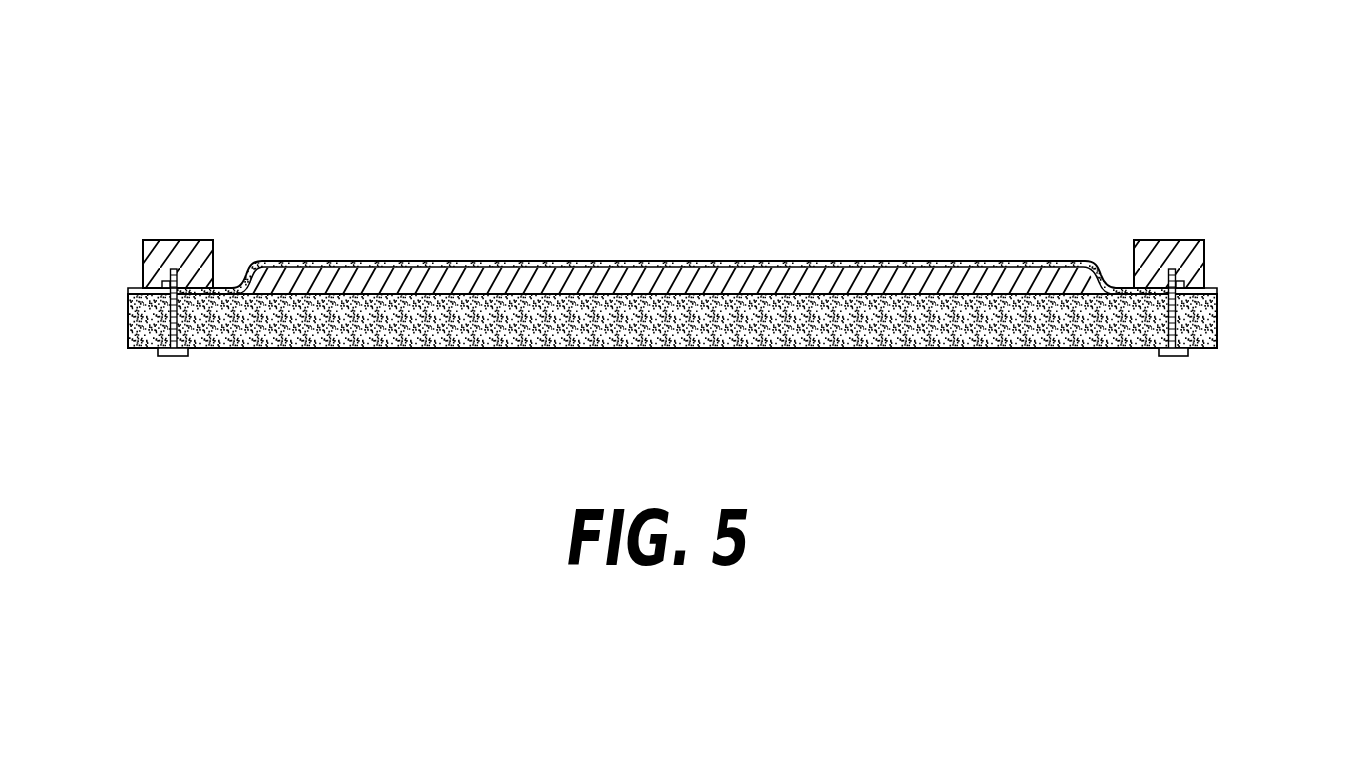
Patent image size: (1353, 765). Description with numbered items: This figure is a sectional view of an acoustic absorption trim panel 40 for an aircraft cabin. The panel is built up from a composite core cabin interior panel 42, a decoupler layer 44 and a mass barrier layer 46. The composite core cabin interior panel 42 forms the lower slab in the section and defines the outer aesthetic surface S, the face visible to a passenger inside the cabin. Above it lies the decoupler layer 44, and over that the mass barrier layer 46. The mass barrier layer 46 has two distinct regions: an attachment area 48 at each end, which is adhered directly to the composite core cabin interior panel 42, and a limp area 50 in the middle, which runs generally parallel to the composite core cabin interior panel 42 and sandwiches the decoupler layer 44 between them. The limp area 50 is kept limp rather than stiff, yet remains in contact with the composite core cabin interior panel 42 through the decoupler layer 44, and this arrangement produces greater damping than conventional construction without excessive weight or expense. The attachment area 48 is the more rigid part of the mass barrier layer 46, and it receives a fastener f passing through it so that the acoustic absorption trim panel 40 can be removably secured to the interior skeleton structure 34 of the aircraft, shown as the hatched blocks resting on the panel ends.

The interior skeleton structure 34 is at (142, 252).
The acoustic absorption trim panel 40 is at (715, 173).
The composite core cabin interior panel 42 is at (1057, 335).
The decoupler layer 44 is at (1000, 278).
The mass barrier layer 46 is at (715, 258).
The attachment area 48 is at (128, 288).
The limp area 50 is at (605, 262).
The fastener f is at (165, 356).
The outer aesthetic surface S is at (640, 350).